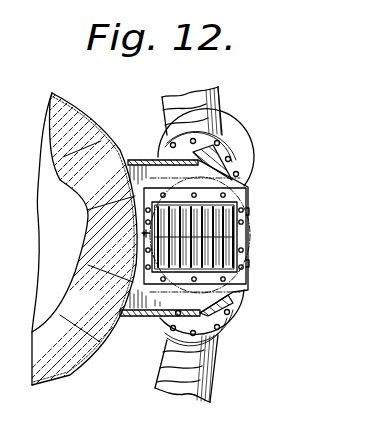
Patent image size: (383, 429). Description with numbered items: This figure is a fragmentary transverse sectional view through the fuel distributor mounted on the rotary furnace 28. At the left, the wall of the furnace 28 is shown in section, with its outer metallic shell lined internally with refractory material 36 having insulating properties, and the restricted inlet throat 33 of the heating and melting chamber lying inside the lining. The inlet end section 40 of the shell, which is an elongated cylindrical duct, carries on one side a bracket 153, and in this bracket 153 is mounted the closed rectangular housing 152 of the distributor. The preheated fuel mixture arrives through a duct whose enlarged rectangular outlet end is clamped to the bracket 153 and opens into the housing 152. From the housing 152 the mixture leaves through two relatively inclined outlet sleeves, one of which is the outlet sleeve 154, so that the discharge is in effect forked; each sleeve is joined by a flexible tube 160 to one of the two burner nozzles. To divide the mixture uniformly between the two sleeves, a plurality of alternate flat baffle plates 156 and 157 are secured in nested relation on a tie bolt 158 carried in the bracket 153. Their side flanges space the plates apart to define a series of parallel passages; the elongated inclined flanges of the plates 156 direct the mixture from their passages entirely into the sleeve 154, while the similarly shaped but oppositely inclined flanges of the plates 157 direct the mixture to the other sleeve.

The furnace 28 is at (41, 101).
The refractory material 36 is at (58, 128).
The inlet end section 40 is at (187, 157).
The inlet throat 33 is at (54, 251).
The housing 152 is at (243, 250).
The bracket 153 is at (210, 181).
The outlet sleeve 154 is at (220, 142).
The baffle plates 156 is at (240, 258).
The baffle plates 157 is at (240, 213).
The tie bolt 158 is at (227, 237).
The flexible tubes 160 is at (215, 100).